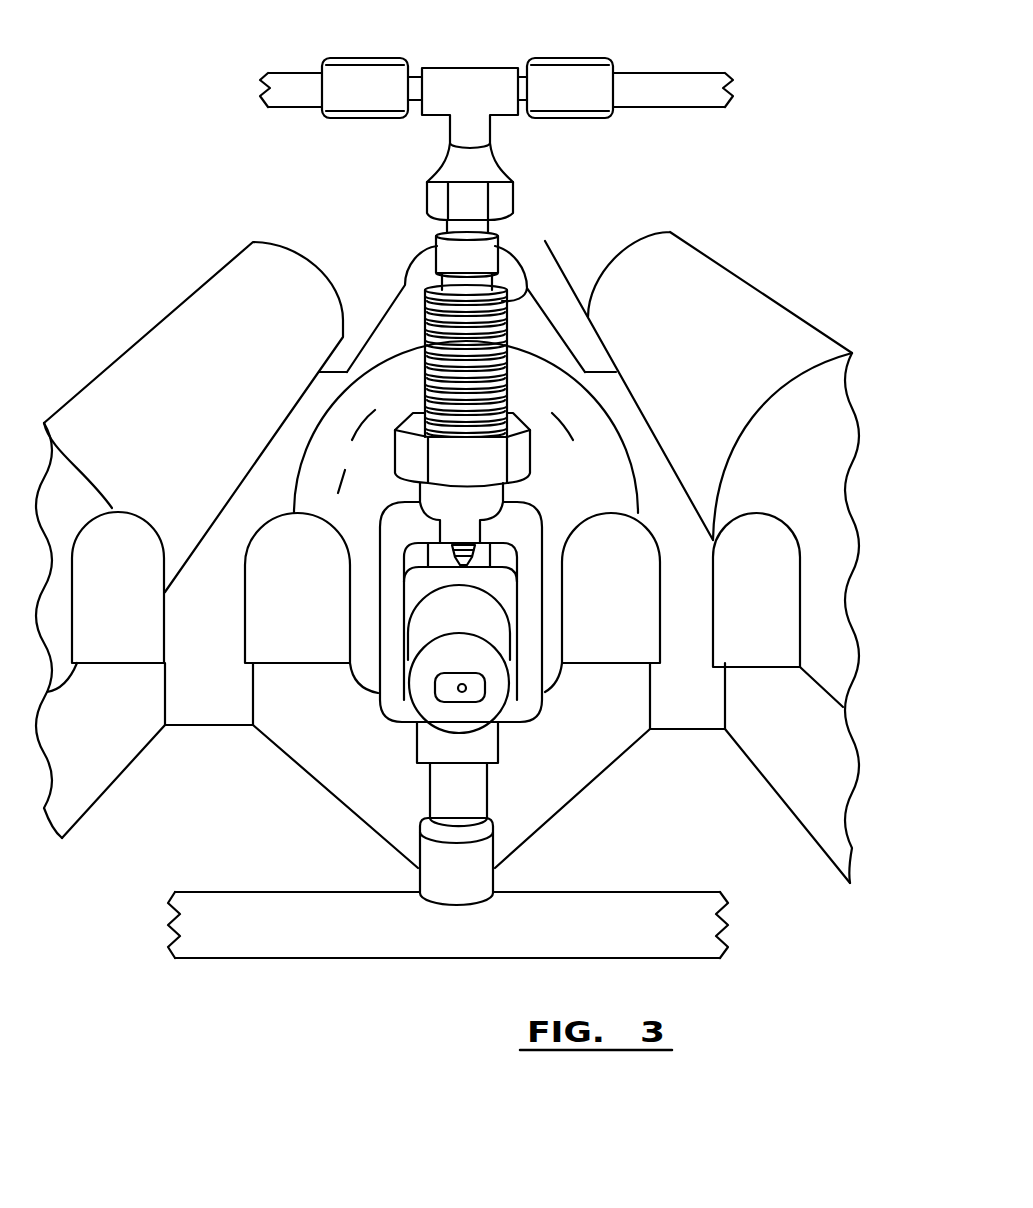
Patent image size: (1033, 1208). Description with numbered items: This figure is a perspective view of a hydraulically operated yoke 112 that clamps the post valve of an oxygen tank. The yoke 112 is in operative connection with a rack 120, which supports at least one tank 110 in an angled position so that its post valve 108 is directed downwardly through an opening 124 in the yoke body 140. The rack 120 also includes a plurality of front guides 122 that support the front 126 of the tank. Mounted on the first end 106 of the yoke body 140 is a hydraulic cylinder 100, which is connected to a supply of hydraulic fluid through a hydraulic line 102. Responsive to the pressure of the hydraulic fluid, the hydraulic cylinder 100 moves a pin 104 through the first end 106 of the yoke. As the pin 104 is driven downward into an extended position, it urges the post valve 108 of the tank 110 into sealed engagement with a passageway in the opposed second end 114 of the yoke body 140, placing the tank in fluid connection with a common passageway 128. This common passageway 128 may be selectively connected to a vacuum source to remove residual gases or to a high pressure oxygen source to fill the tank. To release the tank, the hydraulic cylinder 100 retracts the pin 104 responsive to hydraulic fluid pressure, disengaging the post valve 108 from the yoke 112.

The hydraulic cylinder 100 is at (547, 247).
The hydraulic line 102 is at (643, 72).
The pin 104 is at (410, 568).
The first end 106 is at (513, 487).
The post valve 108 is at (377, 695).
The tank 110 is at (412, 287).
The yoke 112 is at (550, 226).
The second end 114 is at (538, 695).
The rack 120 is at (172, 702).
The front guides 122 is at (352, 811).
The opening 124 is at (398, 574).
The front 126 is at (307, 490).
The common passageway 128 is at (287, 933).
The yoke body 140 is at (397, 512).